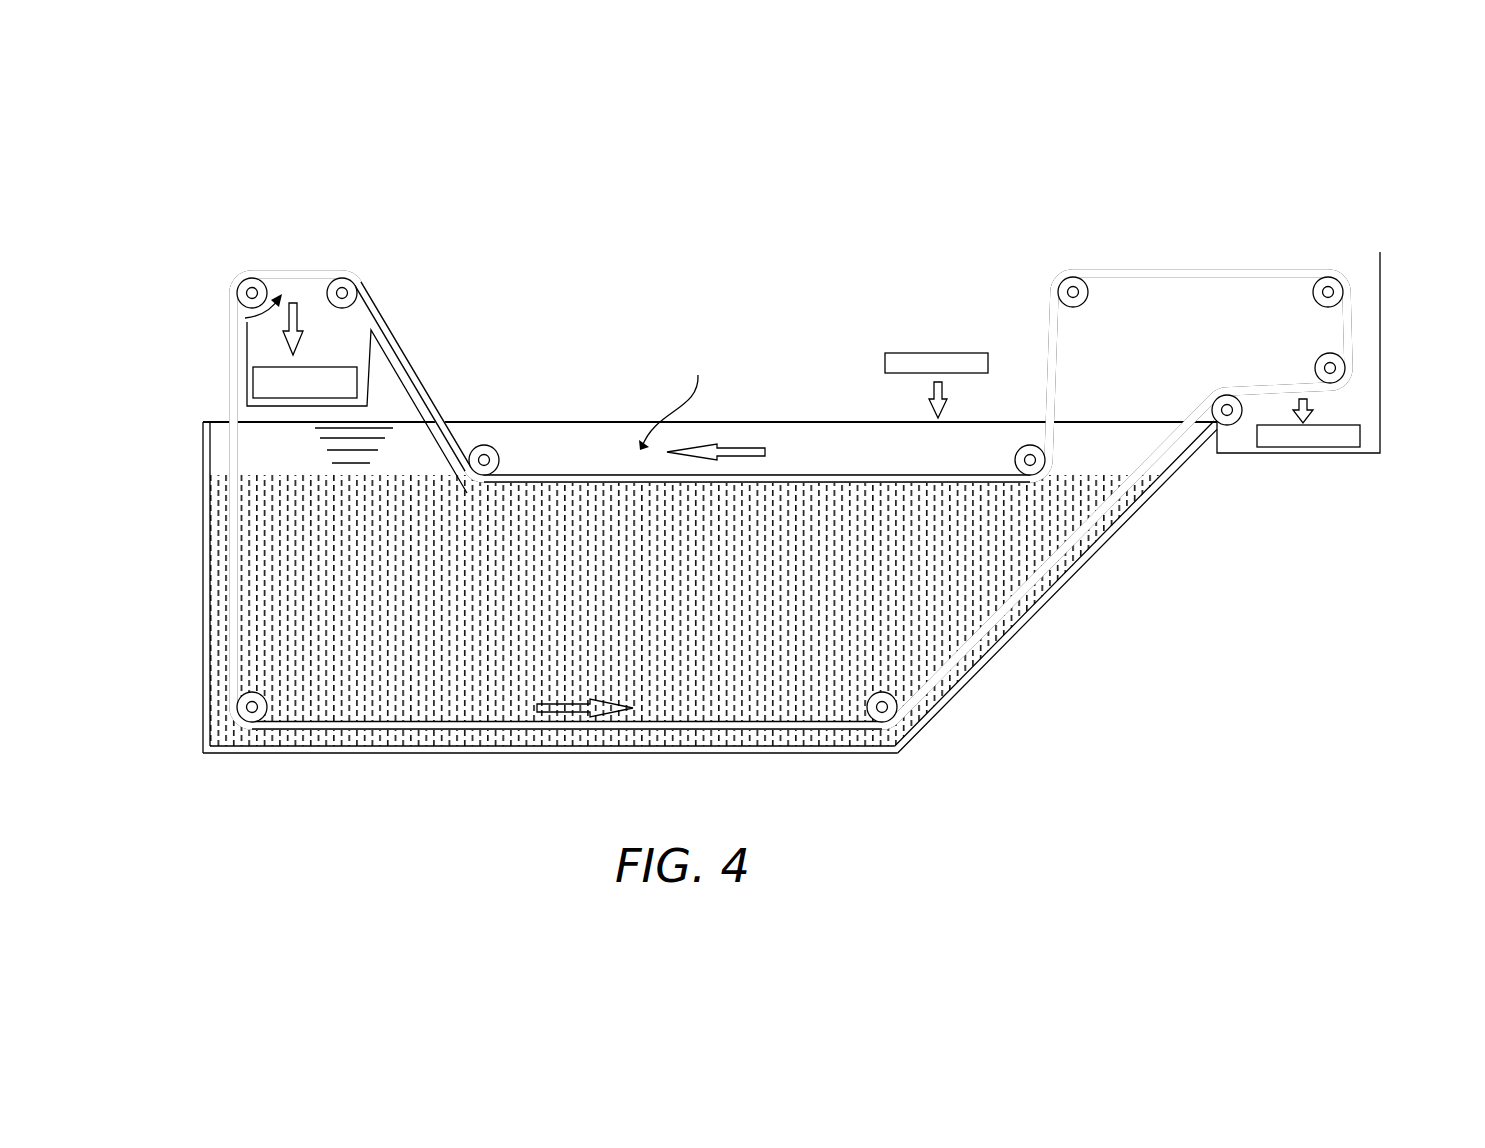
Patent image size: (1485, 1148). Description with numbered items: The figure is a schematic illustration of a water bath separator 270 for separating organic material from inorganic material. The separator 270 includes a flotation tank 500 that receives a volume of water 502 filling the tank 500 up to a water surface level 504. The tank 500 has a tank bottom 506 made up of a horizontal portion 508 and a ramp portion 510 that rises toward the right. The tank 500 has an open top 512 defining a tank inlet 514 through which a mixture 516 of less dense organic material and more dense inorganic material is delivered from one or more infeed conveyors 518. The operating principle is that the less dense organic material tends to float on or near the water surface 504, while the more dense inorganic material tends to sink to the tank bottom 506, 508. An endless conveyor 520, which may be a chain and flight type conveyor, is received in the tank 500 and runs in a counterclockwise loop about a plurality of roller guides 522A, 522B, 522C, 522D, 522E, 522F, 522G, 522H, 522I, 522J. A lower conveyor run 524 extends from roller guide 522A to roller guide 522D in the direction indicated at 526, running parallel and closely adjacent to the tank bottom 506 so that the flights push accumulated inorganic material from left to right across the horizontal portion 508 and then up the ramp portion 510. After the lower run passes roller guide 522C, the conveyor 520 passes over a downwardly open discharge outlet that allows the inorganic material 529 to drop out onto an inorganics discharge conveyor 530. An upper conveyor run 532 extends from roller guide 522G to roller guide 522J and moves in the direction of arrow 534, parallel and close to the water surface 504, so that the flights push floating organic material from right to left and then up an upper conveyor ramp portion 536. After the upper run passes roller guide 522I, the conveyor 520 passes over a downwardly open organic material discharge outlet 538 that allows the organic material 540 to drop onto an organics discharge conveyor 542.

The water bath separator 270 is at (1214, 172).
The flotation tank 500 is at (672, 550).
The volume of water 502 is at (947, 582).
The water surface level 504 is at (400, 473).
The tank bottom 506 is at (710, 622).
The horizontal portion 508 is at (790, 758).
The ramp portion 510 is at (987, 660).
The open top 512 is at (621, 421).
The tank inlet 514 is at (678, 395).
The mixture 516 is at (928, 395).
The infeed conveyor 518 is at (903, 353).
The endless conveyor 520 is at (791, 503).
The roller guide 522A is at (253, 722).
The roller guide 522B is at (896, 740).
The roller guide 522C is at (1227, 425).
The roller guide 522D is at (1325, 355).
The roller guide 522E is at (1328, 278).
The roller guide 522F is at (1073, 278).
The roller guide 522G is at (1030, 445).
The roller guide 522H is at (486, 447).
The roller guide 522I is at (353, 283).
The roller guide 522J is at (247, 280).
The lower conveyor run 524 is at (750, 735).
The direction of lower conveyor run 526 is at (575, 715).
The inorganic material 529 is at (1312, 405).
The inorganics discharge conveyor 530 is at (1342, 437).
The upper conveyor run 532 is at (781, 483).
The arrow indicating direction of upper conveyor run 534 is at (757, 447).
The upper conveyor ramp portion 536 is at (378, 307).
The organic material discharge outlet 538 is at (245, 318).
The organic material 540 is at (292, 302).
The organics discharge conveyor 542 is at (263, 382).